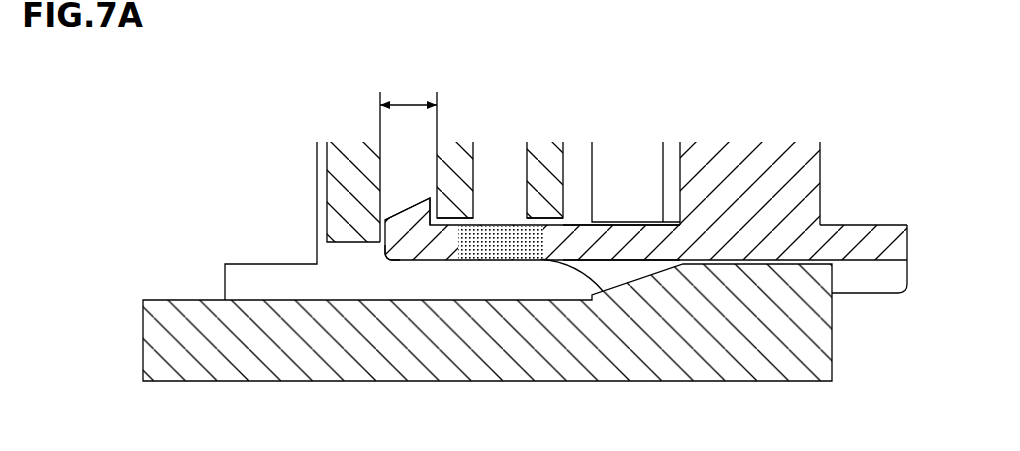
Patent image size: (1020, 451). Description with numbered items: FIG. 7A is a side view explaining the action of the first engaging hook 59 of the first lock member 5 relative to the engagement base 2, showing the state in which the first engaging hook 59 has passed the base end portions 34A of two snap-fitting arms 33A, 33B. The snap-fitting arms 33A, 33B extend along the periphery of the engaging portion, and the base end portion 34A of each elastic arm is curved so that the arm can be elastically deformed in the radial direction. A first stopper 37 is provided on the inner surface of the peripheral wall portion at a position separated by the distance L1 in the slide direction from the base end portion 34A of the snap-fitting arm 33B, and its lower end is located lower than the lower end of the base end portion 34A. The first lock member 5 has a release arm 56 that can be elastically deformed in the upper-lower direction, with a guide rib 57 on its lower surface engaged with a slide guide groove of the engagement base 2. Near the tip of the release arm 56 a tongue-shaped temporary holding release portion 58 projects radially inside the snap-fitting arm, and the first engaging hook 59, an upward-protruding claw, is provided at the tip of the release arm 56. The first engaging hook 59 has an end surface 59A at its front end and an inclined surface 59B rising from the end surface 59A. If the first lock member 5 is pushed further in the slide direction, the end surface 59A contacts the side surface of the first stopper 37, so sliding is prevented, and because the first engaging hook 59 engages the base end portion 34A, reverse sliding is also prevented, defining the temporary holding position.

The engagement base 2 is at (674, 386).
The first lock member 5 is at (828, 188).
The first stopper 37 is at (358, 191).
The snap-fitting arm 33A is at (545, 140).
The snap-fitting arm 33B is at (452, 140).
The base end portion 34A is at (456, 178).
The release arm 56 is at (615, 237).
The guide rib 57 is at (882, 279).
The temporary holding release portion 58 is at (493, 241).
The first engaging hook 59 is at (378, 183).
The end surface 59A is at (380, 248).
The inclined surface 59B is at (395, 228).
The distance L1 is at (408, 87).